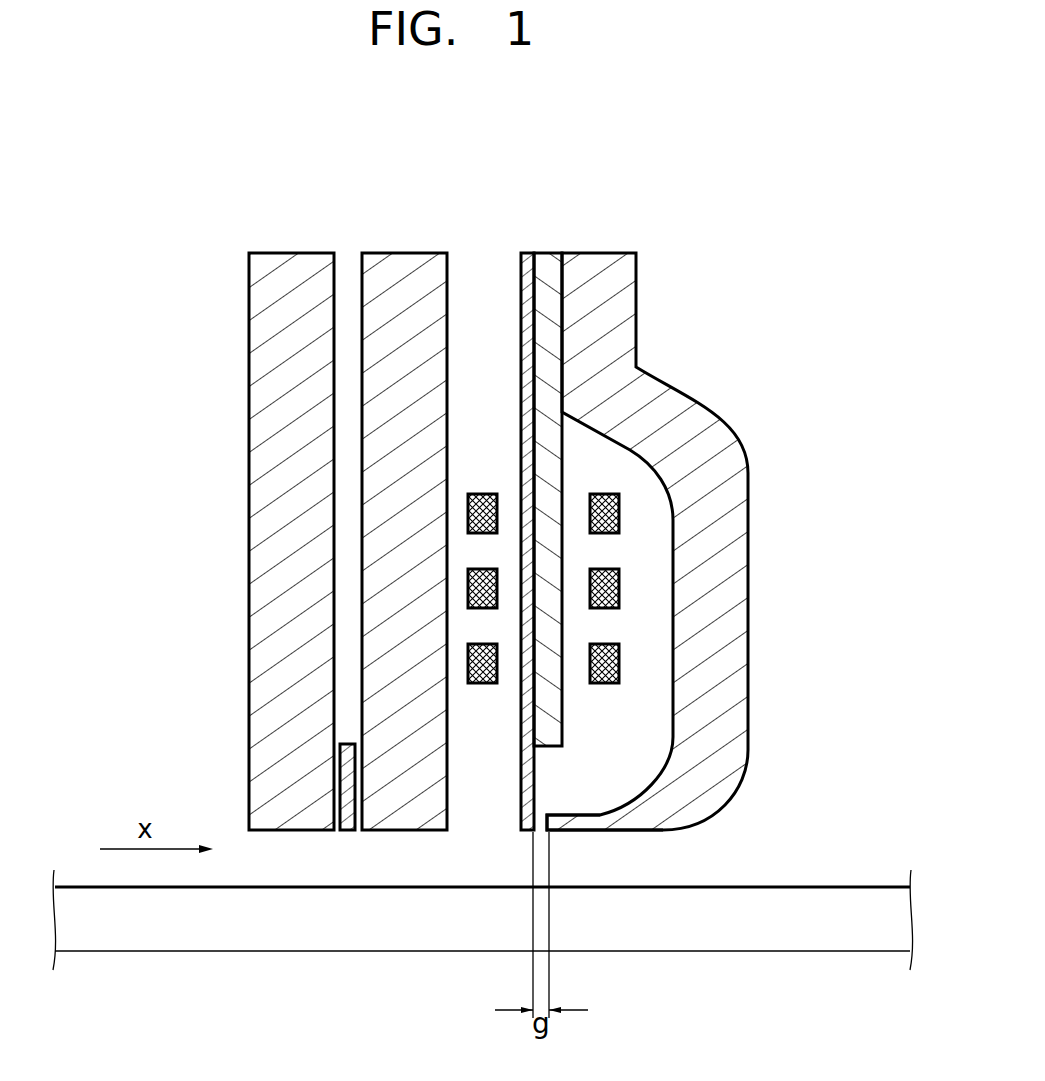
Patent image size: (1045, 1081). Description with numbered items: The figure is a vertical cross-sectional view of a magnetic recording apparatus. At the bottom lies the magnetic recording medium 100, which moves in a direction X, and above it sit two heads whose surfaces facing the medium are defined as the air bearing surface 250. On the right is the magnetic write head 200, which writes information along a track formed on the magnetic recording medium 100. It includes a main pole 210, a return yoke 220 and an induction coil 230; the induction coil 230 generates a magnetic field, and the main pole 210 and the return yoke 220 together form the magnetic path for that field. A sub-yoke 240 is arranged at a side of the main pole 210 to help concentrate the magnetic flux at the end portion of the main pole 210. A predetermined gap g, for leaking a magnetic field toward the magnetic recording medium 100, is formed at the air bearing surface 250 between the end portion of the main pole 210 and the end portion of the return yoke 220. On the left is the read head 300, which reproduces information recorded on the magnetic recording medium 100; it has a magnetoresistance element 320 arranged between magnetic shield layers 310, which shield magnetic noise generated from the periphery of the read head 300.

The magnetic recording medium 100 is at (247, 953).
The magnetic write head 200 is at (640, 609).
The main pole 210 is at (513, 832).
The return yoke 220 is at (733, 614).
The induction coil 230 is at (619, 517).
The sub-yoke 240 is at (550, 710).
The air bearing surface (ABS) 250 is at (613, 832).
The read head 300 is at (272, 499).
The magnetic shield layers 310 is at (403, 253).
The magnetoresistance element 320 is at (347, 778).